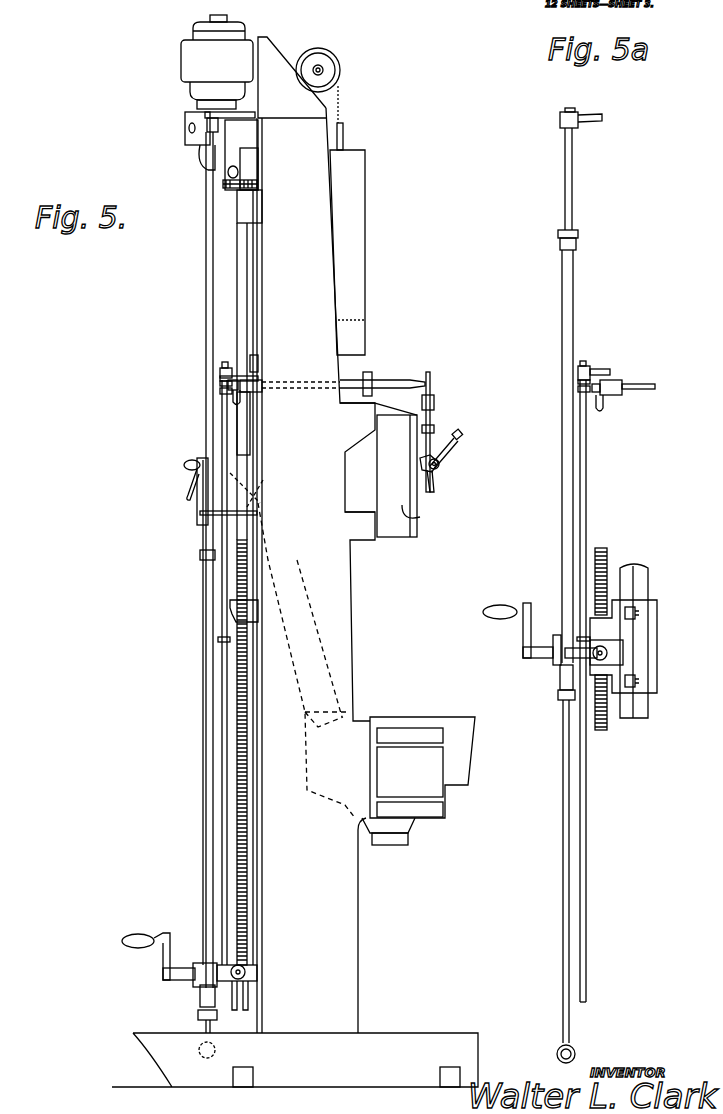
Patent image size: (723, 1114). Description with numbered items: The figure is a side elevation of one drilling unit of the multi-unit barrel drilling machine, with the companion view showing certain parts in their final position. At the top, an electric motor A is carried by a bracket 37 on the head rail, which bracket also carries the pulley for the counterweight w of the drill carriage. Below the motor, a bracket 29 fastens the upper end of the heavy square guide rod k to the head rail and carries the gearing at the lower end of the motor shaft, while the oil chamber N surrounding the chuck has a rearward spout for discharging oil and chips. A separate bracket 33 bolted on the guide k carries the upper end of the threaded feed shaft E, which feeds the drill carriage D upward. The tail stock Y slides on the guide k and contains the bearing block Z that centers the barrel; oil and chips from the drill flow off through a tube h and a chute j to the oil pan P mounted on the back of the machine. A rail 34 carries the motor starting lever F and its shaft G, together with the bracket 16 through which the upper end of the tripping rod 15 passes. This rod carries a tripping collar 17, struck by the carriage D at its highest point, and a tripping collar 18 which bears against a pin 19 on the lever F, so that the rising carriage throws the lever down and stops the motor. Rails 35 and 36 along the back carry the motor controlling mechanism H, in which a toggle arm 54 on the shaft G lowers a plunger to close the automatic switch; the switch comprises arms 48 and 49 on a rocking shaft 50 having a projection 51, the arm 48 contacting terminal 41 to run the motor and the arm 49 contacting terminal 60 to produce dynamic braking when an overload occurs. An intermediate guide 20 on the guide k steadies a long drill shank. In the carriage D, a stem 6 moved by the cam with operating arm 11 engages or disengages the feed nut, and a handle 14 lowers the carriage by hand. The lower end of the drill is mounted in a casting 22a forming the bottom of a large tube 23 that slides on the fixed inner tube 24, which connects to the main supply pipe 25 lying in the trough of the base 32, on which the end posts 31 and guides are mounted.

In FIG. 5, the electric motor A is at (217, 62).
In FIG. 5, the bearing block Z is at (341, 67).
In FIG. 5, the bracket 37 is at (316, 535).
In FIG. 5, the bracket 29 is at (187, 128).
In FIG. 5, the oil chamber N is at (200, 160).
In FIG. 5, the bracket 33 is at (243, 208).
In FIG. 5, the upright guide k is at (257, 240).
In FIG. 5A, the upright guide k is at (642, 719).
In FIG. 5, the counterweight w is at (363, 240).
In FIG. 5, the rail 34 is at (258, 365).
In FIG. 5, the bracket 16 is at (220, 374).
In FIG. 5A, the bracket 16 is at (577, 374).
In FIG. 5, the pin 19 is at (222, 386).
In FIG. 5A, the pin 19 is at (589, 376).
In FIG. 5, the tripping collar 18 is at (218, 393).
In FIG. 5A, the tripping collar 18 is at (577, 390).
In FIG. 5, the starting handle F is at (241, 402).
In FIG. 5A, the starting handle F is at (604, 407).
In FIG. 5, the shaft G is at (355, 385).
In FIG. 5A, the shaft G is at (650, 387).
In FIG. 5, the rail 35 is at (376, 418).
In FIG. 5, the rail 36 is at (368, 528).
In FIG. 5, the motor controlling mechanism H is at (386, 468).
In FIG. 5, the toggle arm 54 is at (432, 392).
In FIG. 5, the terminal 41 is at (429, 432).
In FIG. 5, the switch arm 48 is at (460, 436).
In FIG. 5, the rocking shaft 50 is at (441, 464).
In FIG. 5, the projection 51 is at (426, 462).
In FIG. 5, the switch arm 49 is at (440, 490).
In FIG. 5, the terminal 60 is at (421, 510).
In FIG. 5, the tail stock Y is at (199, 483).
In FIG. 5, the tube h is at (266, 498).
In FIG. 5, the chute j is at (306, 660).
In FIG. 5, the intermediate guide 20 is at (232, 606).
In FIG. 5, the tripping collar 17 is at (220, 639).
In FIG. 5A, the tripping collar 17 is at (582, 638).
In FIG. 5, the tripping rod 15 is at (226, 672).
In FIG. 5A, the tripping rod 15 is at (588, 808).
In FIG. 5, the tube 23 is at (214, 767).
In FIG. 5A, the tube 23 is at (565, 497).
In FIG. 5, the threaded feed shaft E is at (252, 862).
In FIG. 5, the oil pan P is at (418, 762).
In FIG. 5, the end post 31 is at (330, 925).
In FIG. 5, the base 32 is at (295, 1060).
In FIG. 5, the handle 14 is at (153, 934).
In FIG. 5A, the handle 14 is at (525, 605).
In FIG. 5, the carriage D is at (171, 974).
In FIG. 5A, the carriage D is at (523, 646).
In FIG. 5, the stem 6 is at (246, 972).
In FIG. 5A, the stem 6 is at (606, 652).
In FIG. 5, the operating arm 11 is at (247, 992).
In FIG. 5A, the operating arm 11 is at (570, 656).
In FIG. 5, the casting 22a is at (203, 1000).
In FIG. 5A, the casting 22a is at (566, 682).
In FIG. 5, the inner tube 24 is at (206, 1023).
In FIG. 5A, the inner tube 24 is at (563, 942).
In FIG. 5, the main supply pipe 25 is at (200, 1050).
In FIG. 5A, the main supply pipe 25 is at (560, 1047).